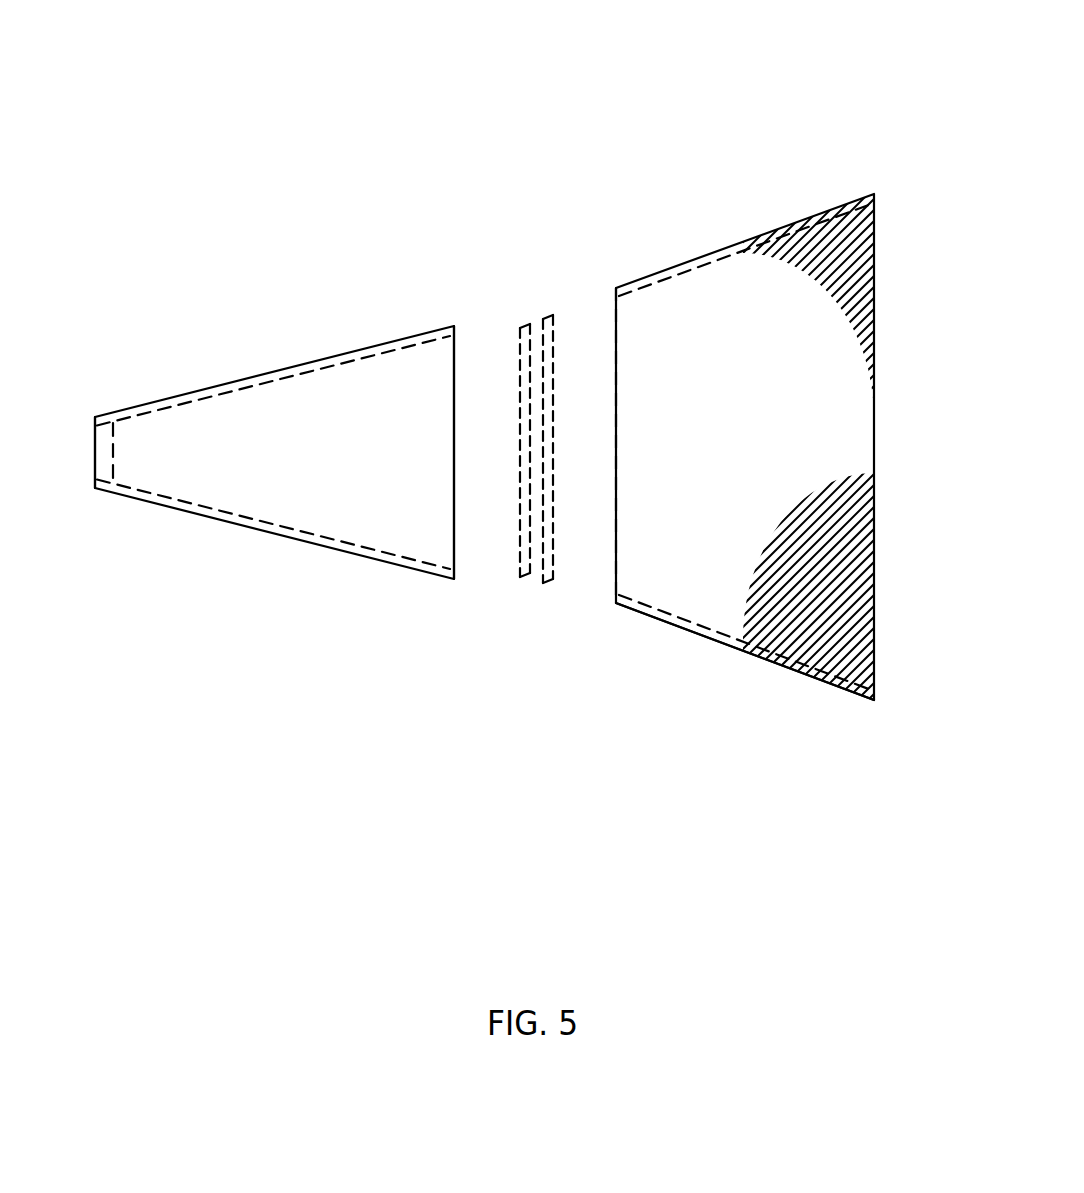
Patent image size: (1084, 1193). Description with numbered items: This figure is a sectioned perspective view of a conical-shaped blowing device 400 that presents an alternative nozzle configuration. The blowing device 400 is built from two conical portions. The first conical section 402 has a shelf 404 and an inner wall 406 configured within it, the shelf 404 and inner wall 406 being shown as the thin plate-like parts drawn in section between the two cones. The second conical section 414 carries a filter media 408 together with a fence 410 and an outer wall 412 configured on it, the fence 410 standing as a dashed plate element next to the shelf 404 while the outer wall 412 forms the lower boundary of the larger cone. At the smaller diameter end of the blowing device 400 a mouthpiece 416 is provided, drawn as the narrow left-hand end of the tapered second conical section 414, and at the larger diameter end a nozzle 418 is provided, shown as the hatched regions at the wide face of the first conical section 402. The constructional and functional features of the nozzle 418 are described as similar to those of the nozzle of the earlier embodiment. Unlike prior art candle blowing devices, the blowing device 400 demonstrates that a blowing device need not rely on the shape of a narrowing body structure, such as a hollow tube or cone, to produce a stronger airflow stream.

The blowing device 400 is at (808, 82).
The first conical section 402 is at (647, 483).
The shelf 404 is at (526, 324).
The inner wall 406 is at (452, 347).
The filter media 408 is at (540, 583).
The fence 410 is at (564, 429).
The outer wall 412 is at (616, 603).
The second conical section 414 is at (249, 395).
The mouthpiece 416 is at (93, 457).
The nozzle 418 is at (845, 648).